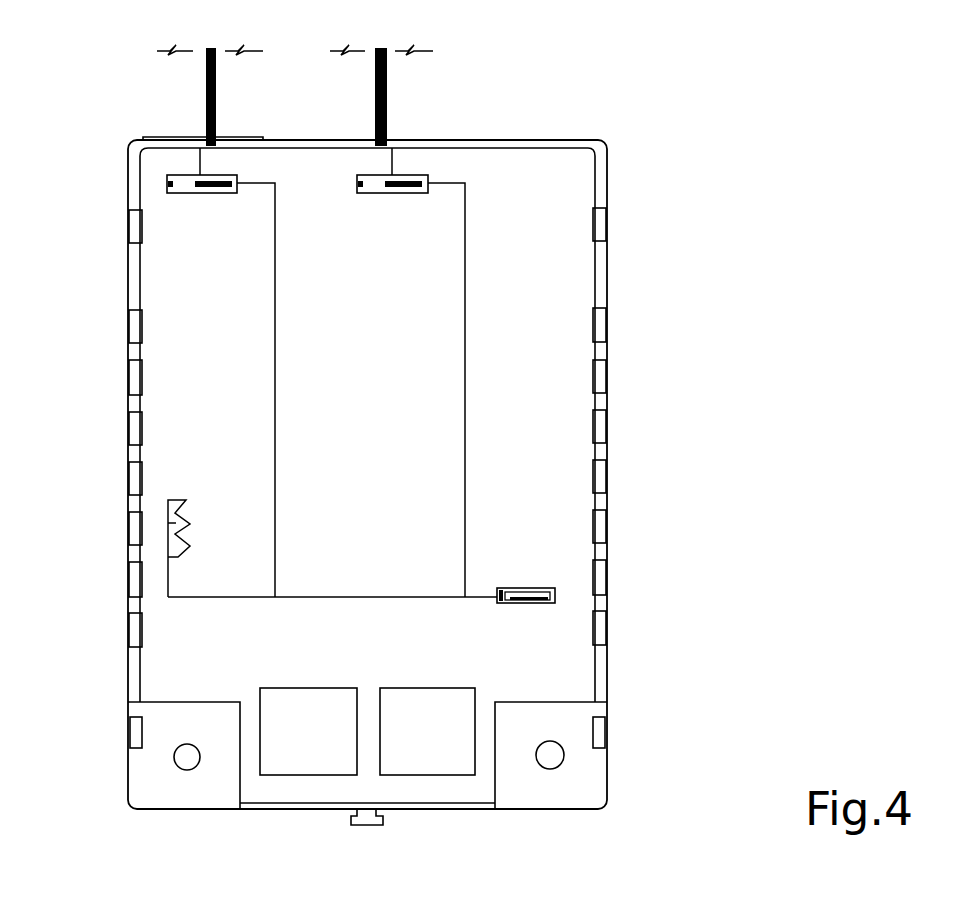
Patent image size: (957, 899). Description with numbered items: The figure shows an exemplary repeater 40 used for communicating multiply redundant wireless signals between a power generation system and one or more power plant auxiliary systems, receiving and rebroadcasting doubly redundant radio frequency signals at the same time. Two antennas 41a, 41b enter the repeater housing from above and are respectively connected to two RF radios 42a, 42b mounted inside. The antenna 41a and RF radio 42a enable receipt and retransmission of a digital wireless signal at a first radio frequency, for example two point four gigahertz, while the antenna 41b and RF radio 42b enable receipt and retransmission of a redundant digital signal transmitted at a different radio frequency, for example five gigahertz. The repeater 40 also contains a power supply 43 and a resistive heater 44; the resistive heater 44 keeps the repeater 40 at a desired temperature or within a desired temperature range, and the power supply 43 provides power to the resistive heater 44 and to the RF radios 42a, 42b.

The repeater 40 is at (618, 370).
The antenna 41a is at (216, 93).
The antenna 41b is at (388, 77).
The RF radio 42a is at (213, 175).
The RF radio 42b is at (415, 173).
The power supply 43 is at (543, 604).
The resistive heater 44 is at (172, 523).